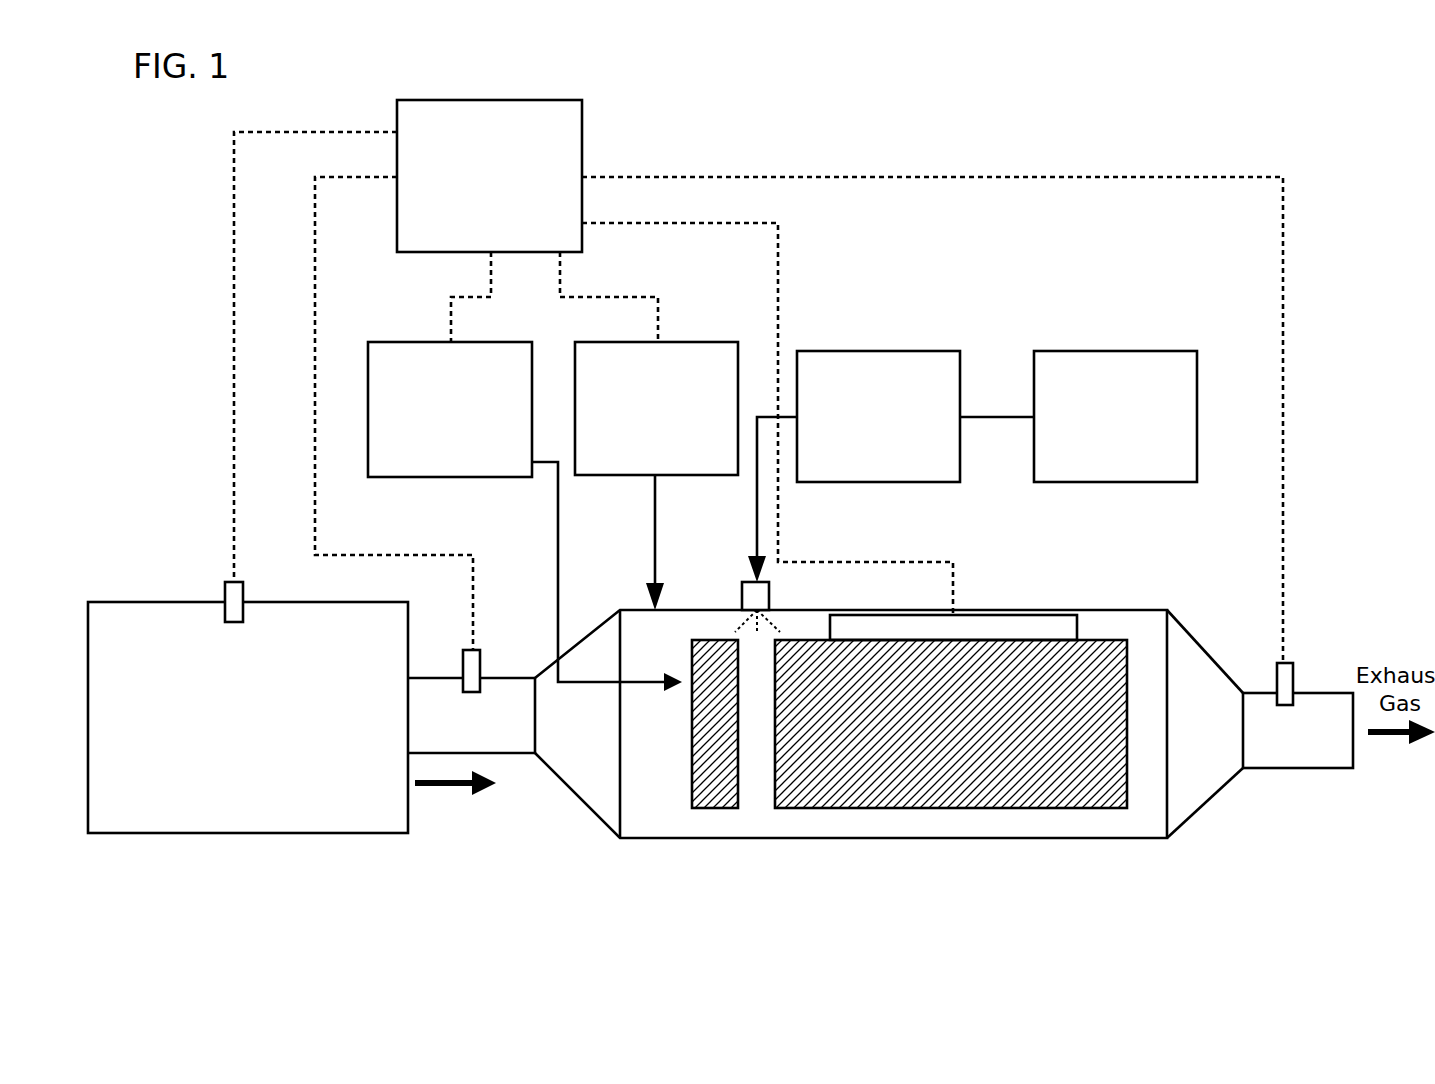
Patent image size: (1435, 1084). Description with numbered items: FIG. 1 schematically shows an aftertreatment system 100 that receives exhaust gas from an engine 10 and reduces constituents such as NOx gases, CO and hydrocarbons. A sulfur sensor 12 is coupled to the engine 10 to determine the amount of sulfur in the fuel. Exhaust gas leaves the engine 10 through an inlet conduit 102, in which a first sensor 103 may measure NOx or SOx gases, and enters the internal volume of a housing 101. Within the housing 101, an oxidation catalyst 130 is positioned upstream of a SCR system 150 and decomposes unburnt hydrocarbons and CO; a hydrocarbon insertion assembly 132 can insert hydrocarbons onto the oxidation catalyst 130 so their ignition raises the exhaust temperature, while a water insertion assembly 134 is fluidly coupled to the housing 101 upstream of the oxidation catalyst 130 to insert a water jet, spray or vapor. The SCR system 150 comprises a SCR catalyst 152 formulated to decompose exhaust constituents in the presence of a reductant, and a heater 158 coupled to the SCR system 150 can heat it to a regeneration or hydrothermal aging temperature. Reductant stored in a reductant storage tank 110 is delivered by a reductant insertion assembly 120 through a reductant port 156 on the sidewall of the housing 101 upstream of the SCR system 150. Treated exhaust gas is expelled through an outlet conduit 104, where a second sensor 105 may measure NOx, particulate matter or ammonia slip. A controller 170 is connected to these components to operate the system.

The aftertreatment system 100 is at (1268, 98).
The controller 170 is at (469, 204).
The hydrocarbon insertion assembly 132 is at (429, 465).
The water insertion assembly 134 is at (635, 465).
The reductant insertion assembly 120 is at (857, 472).
The reductant storage tank 110 is at (1094, 472).
The engine 10 is at (236, 745).
The sulfur sensor 12 is at (243, 600).
The inlet conduit 102 is at (522, 740).
The first sensor 103 is at (480, 667).
The housing 101 is at (913, 840).
The outlet conduit 104 is at (1318, 762).
The second sensor 105 is at (1293, 680).
The oxidation catalyst 130 is at (713, 813).
The SCR system 150 is at (975, 826).
The SCR catalyst 152 is at (1050, 780).
The heater 158 is at (1077, 626).
The reductant port 156 is at (742, 596).